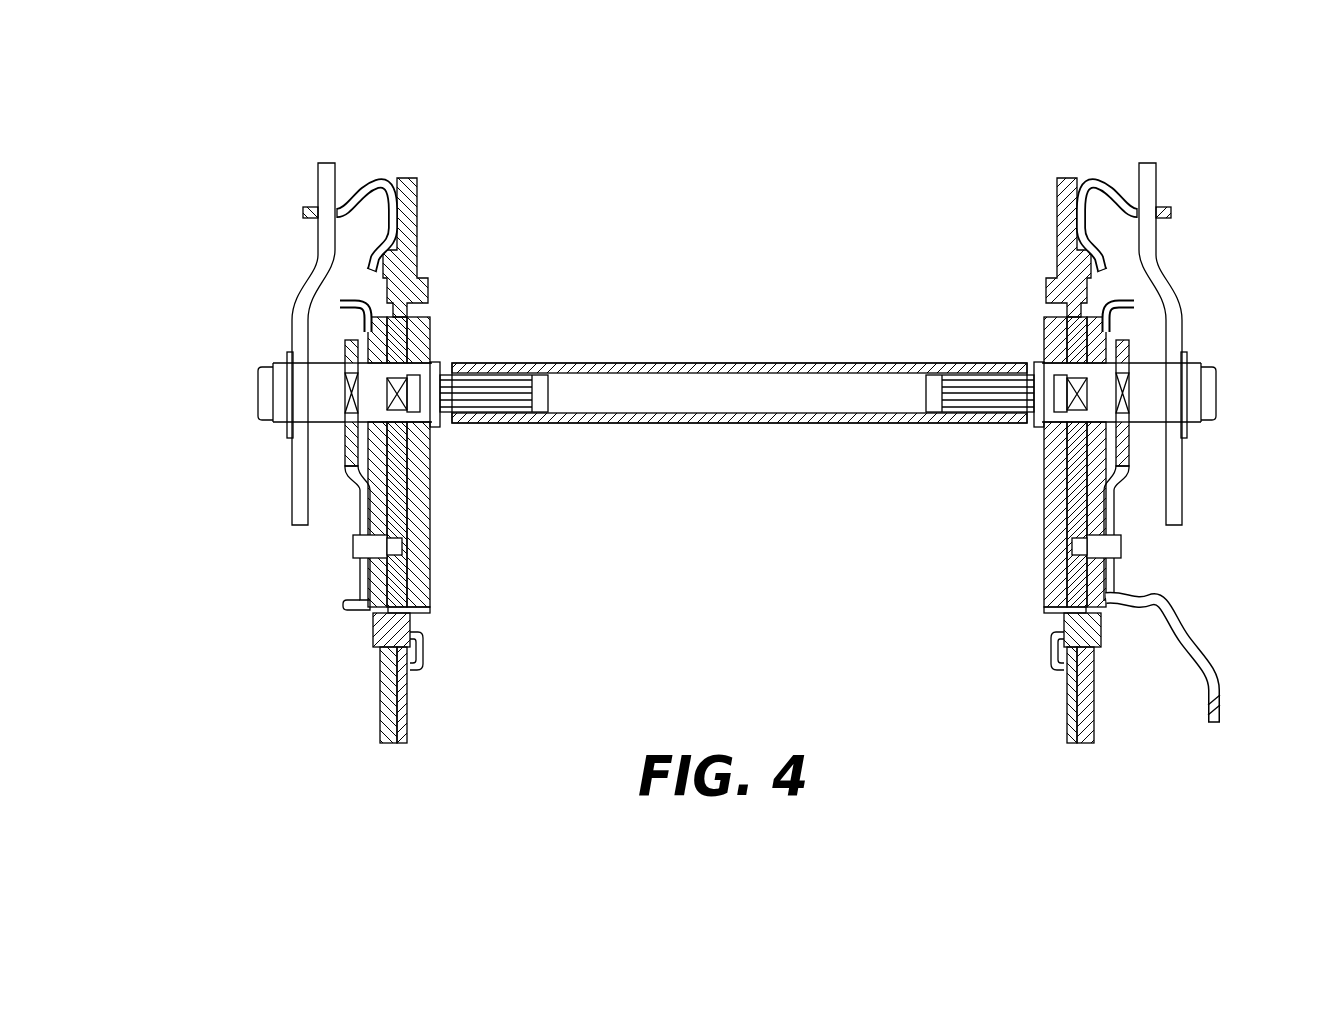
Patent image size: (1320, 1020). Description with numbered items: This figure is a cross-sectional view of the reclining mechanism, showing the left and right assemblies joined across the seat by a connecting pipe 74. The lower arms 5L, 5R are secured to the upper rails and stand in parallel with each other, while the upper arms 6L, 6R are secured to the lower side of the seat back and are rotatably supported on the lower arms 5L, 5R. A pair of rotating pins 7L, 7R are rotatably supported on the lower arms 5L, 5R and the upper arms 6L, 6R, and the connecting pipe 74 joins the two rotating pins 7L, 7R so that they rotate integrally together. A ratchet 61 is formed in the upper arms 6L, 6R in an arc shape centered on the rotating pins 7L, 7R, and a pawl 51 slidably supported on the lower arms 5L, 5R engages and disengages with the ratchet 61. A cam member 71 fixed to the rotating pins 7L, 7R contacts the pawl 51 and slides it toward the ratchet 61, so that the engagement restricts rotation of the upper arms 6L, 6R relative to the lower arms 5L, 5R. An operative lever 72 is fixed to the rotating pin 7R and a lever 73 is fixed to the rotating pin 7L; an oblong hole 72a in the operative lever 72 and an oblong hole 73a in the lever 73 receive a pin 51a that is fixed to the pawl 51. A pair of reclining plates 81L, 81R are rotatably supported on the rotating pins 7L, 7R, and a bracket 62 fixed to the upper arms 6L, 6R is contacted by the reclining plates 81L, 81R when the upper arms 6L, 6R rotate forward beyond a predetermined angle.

The lower arm 5L is at (387, 750).
The lower arm 5R is at (1100, 745).
The upper arm 6L is at (425, 212).
The upper arm 6R is at (1050, 175).
The rotating pin 7L is at (278, 360).
The rotating pin 7R is at (1214, 360).
The pawl 51 is at (373, 630).
The pin 51a is at (353, 606).
The ratchet 61 is at (412, 615).
The bracket 62 is at (303, 212).
The cam member 71 is at (408, 487).
The operative lever 72 is at (1163, 613).
The oblong hole 72a is at (1120, 550).
The lever 73 is at (358, 487).
The oblong hole 73a is at (353, 550).
The connecting pipe 74 is at (688, 425).
The reclining plate 81L is at (333, 165).
The reclining plate 81R is at (1150, 172).